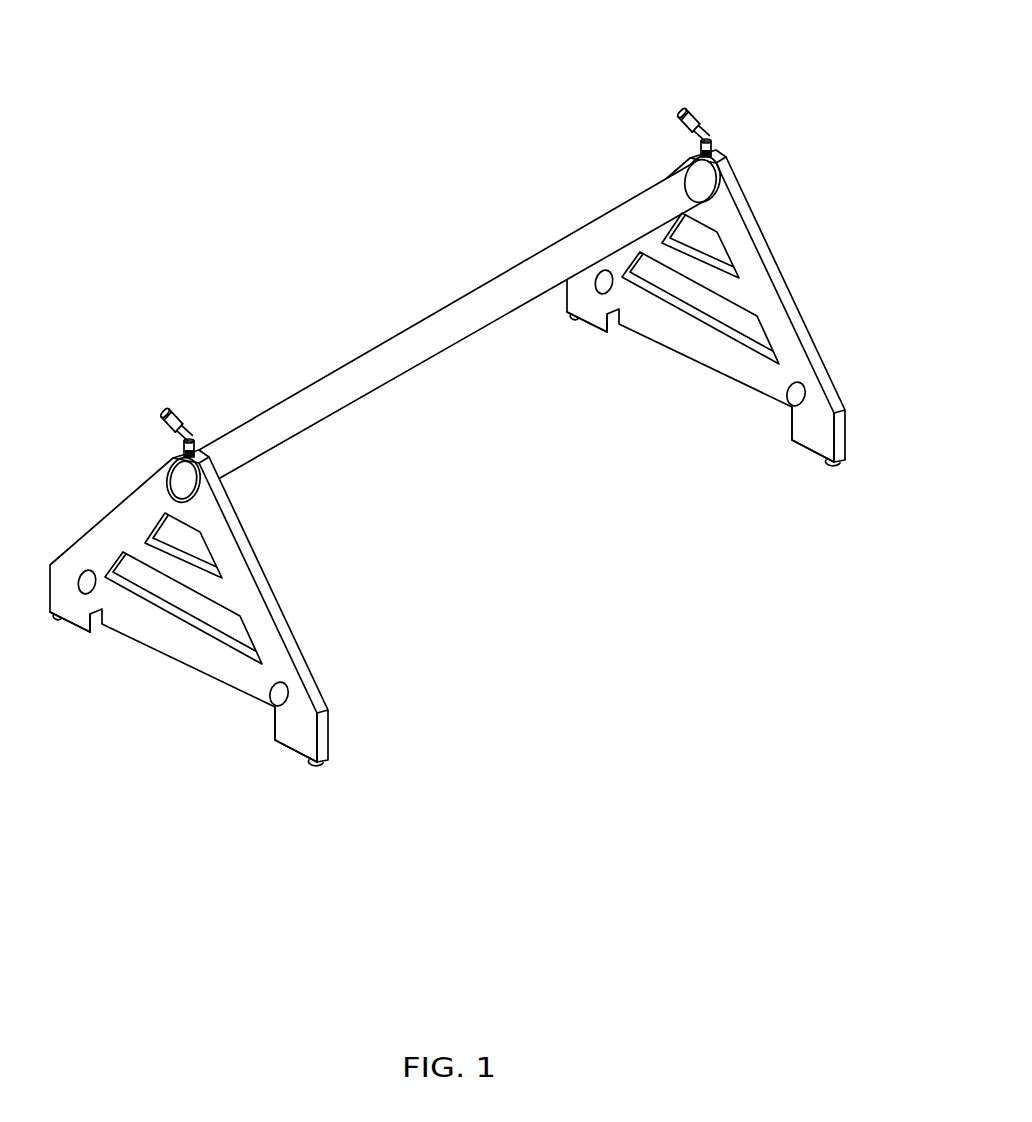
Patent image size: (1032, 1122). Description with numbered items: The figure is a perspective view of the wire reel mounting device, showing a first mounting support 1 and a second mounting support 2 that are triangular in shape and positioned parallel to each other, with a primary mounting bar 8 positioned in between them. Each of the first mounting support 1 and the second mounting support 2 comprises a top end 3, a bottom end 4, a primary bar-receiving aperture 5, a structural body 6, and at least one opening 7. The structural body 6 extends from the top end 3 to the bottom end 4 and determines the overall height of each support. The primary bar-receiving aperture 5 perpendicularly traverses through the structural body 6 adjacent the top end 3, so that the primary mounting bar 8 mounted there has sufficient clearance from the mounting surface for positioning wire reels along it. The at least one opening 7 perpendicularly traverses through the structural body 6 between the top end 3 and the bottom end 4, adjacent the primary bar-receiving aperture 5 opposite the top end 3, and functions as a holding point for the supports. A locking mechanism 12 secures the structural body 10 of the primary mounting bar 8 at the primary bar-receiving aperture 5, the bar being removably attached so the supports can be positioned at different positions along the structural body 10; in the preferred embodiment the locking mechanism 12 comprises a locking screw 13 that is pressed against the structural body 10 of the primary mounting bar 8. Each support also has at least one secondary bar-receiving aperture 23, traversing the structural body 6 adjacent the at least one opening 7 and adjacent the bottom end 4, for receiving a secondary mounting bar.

The first mounting support 1 is at (357, 721).
The second mounting support 2 is at (860, 399).
The top end 3 is at (178, 449).
The bottom end 4 is at (286, 748).
The primary bar-receiving aperture 5 is at (193, 491).
The structural body 6 is at (246, 597).
The opening 7 is at (160, 531).
The primary mounting bar 8 is at (428, 378).
The structural body 10 is at (418, 333).
The locking mechanism 12 is at (192, 409).
The locking screw 13 is at (165, 416).
The secondary bar-receiving aperture 23 is at (80, 585).